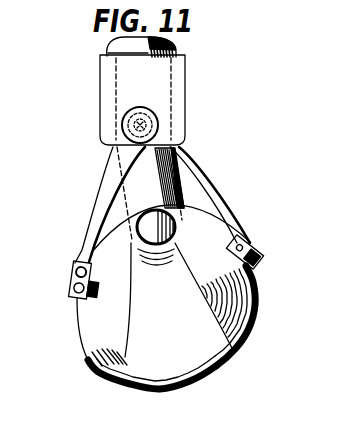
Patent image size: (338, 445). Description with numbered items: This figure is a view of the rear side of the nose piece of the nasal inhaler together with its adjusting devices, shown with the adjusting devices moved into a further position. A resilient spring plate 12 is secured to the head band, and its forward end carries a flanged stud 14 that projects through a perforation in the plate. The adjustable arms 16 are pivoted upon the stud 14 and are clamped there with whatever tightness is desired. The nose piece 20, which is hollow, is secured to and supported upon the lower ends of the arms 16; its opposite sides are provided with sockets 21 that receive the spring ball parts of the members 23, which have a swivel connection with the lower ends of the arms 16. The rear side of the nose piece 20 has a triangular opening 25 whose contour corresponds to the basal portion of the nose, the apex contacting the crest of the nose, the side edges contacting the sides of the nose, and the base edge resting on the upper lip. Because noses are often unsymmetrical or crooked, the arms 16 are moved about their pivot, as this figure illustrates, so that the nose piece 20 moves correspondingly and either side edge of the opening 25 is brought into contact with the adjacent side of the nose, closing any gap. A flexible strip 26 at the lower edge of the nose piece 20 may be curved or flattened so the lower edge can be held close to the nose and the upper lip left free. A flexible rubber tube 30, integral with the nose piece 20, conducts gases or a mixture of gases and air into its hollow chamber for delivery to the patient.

The resilient spring plate 12 is at (179, 98).
The flanged stud 14 is at (122, 125).
The adjustable arms 16 is at (91, 209).
The flexible rubber tube 30 is at (150, 191).
The nose piece 20 is at (85, 328).
The sockets 21 is at (252, 276).
The members 23 is at (68, 300).
The opening 25 is at (190, 384).
The flexible strip 26 is at (147, 394).